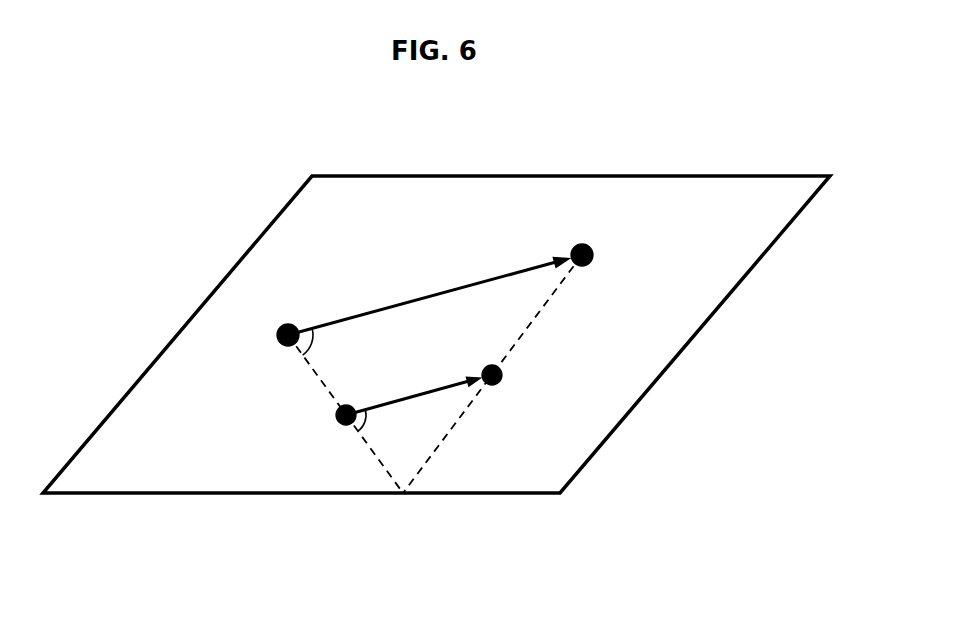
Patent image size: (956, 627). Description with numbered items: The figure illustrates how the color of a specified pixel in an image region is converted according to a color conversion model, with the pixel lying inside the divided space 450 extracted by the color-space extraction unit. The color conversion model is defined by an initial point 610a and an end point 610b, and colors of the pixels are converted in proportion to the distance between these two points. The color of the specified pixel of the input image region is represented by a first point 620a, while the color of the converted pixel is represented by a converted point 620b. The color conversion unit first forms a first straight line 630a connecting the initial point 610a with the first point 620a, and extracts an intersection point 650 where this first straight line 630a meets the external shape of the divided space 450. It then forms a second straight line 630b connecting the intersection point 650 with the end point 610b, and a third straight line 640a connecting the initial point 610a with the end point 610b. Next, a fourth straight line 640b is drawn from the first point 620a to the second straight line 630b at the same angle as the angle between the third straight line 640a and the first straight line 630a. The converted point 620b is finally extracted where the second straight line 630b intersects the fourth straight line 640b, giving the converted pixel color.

The divided space 450 is at (510, 174).
The initial point C0 610a is at (290, 325).
The end point C1 610b is at (583, 245).
The point Ci 620a is at (338, 424).
The point Cip 620b is at (503, 378).
The straight line L0 630a is at (326, 390).
The straight line L1 630b is at (560, 285).
The straight line L01 640a is at (445, 288).
The straight line Lip 640b is at (433, 392).
The point P 650 is at (418, 512).